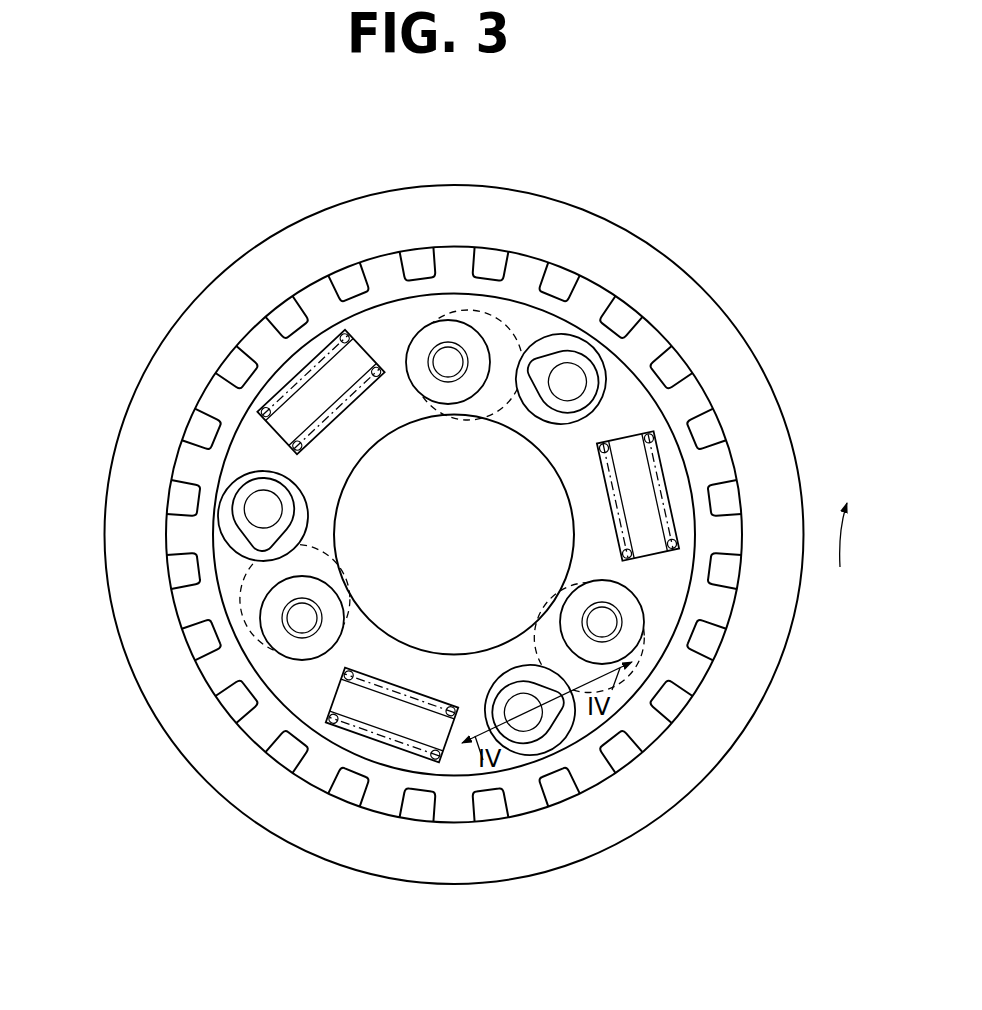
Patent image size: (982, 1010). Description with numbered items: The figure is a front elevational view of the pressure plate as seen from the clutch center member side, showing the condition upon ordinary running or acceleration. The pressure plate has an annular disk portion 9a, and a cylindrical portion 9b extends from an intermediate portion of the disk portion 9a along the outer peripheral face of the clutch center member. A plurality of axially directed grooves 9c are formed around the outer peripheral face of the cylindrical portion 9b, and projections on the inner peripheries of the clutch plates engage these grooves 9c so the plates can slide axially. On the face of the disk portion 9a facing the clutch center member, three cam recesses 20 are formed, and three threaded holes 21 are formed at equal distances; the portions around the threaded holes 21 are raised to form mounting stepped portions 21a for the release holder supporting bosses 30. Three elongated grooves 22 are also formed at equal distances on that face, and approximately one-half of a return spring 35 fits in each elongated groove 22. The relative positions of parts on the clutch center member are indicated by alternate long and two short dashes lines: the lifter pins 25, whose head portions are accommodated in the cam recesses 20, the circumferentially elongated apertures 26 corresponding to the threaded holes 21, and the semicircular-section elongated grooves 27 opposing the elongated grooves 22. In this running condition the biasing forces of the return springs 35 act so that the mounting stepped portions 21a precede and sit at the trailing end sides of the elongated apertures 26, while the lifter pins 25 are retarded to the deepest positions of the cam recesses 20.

The annular disk portion 9a is at (662, 595).
The cylindrical portion 9b is at (664, 684).
The grooves 9c is at (558, 790).
The cam recesses 20 is at (557, 358).
The threaded holes 21 is at (449, 352).
The mounting stepped portions 21a is at (452, 401).
The release holder supporting bosses 30 is at (420, 340).
The elongated grooves 22 is at (295, 352).
The lifter pins 25 is at (586, 368).
The elongated apertures 26 is at (494, 318).
The elongated grooves 27 is at (297, 362).
The return spring 35 is at (288, 393).